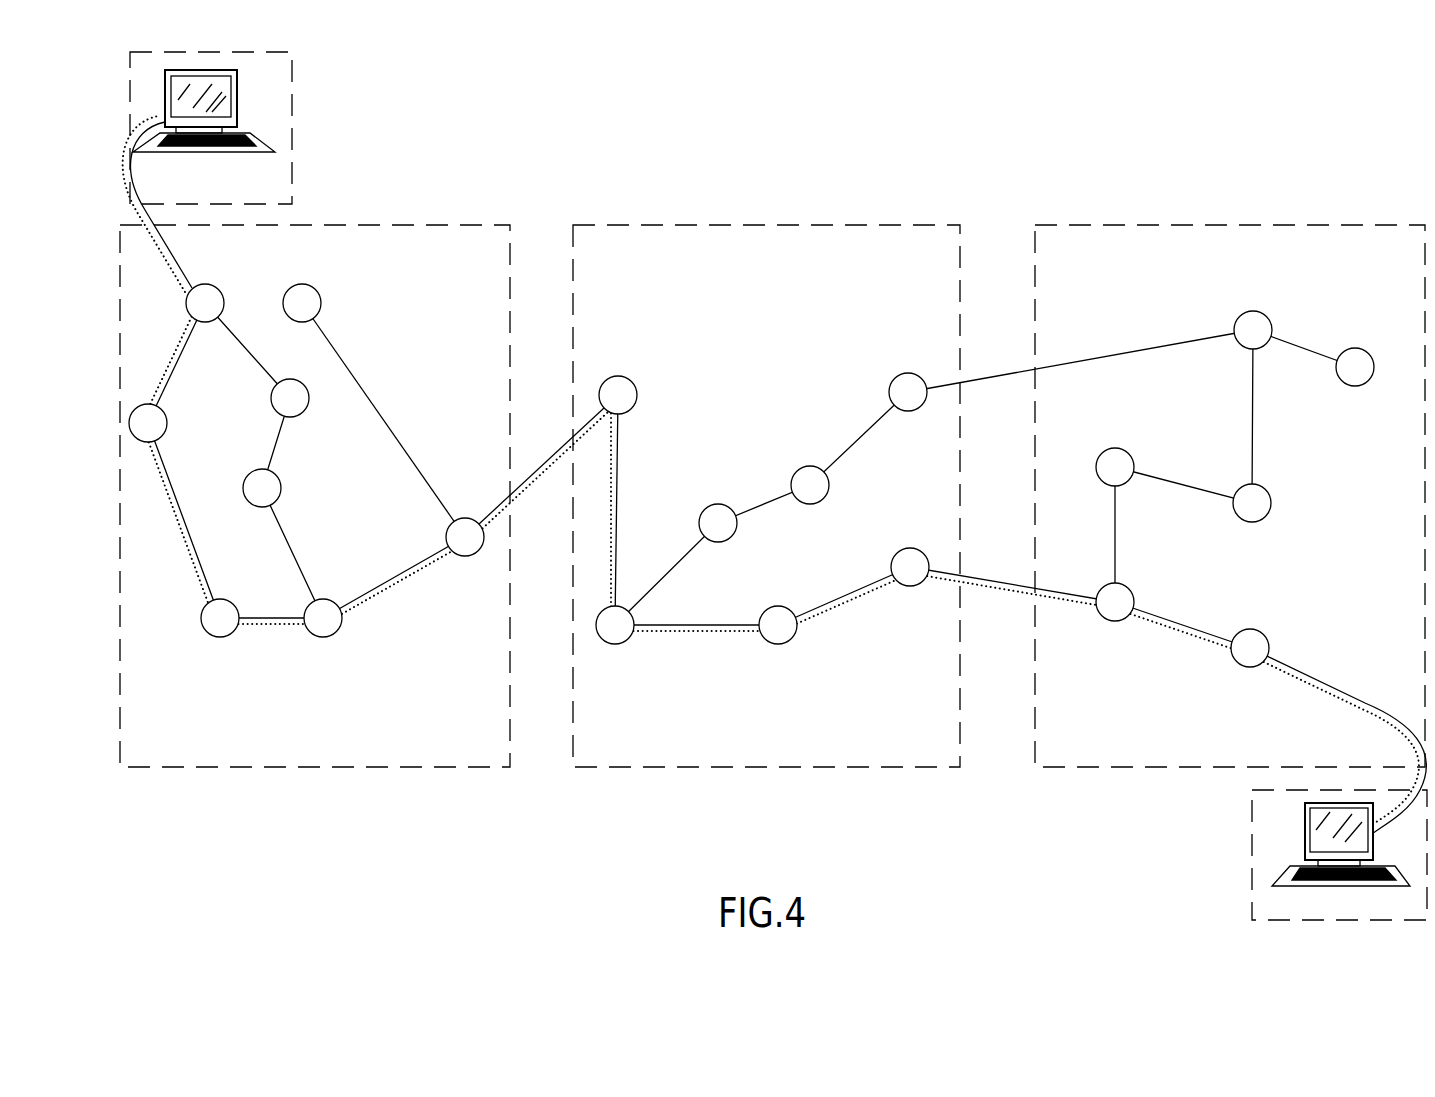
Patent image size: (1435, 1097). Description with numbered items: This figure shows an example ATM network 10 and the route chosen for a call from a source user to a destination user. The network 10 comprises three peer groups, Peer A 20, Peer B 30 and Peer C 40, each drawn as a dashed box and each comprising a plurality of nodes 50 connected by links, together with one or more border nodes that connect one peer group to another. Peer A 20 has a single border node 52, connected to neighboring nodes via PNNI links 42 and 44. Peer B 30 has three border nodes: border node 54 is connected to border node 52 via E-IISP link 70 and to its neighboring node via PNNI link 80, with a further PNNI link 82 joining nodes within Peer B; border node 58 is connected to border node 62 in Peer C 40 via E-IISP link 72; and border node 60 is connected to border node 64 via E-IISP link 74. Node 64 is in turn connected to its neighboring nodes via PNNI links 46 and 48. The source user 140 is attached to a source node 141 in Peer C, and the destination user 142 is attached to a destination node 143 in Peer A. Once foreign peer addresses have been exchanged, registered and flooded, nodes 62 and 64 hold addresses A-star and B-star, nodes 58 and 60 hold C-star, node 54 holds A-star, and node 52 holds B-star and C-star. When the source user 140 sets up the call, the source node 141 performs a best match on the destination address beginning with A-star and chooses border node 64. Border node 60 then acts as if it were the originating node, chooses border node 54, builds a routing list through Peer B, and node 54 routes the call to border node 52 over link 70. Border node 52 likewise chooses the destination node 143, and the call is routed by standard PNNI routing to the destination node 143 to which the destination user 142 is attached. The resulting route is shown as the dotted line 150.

The ATM network 10 is at (236, 862).
The Peer A 20 is at (312, 768).
The Peer B 30 is at (722, 768).
The Peer C 40 is at (1088, 768).
The PNNI link 42 is at (385, 435).
The PNNI link 44 is at (402, 582).
The PNNI link 46 is at (1112, 498).
The PNNI link 48 is at (1198, 635).
The nodes 50 is at (218, 289).
The border node A5 52 is at (465, 518).
The border node B1 54 is at (609, 378).
The border node B5 58 is at (896, 375).
The border node B4 60 is at (916, 586).
The border node C3 62 is at (1244, 313).
The border node C1 64 is at (1116, 621).
The E-IISP link 70 is at (524, 493).
The E-IISP link 72 is at (1018, 378).
The E-IISP link 74 is at (1018, 588).
The PNNI link 80 is at (620, 546).
The PNNI link 82 is at (715, 630).
The source user 140 is at (1305, 825).
The source node 141 is at (1248, 630).
The destination user 142 is at (237, 97).
The destination node 143 is at (186, 303).
The route 150 is at (1364, 693).